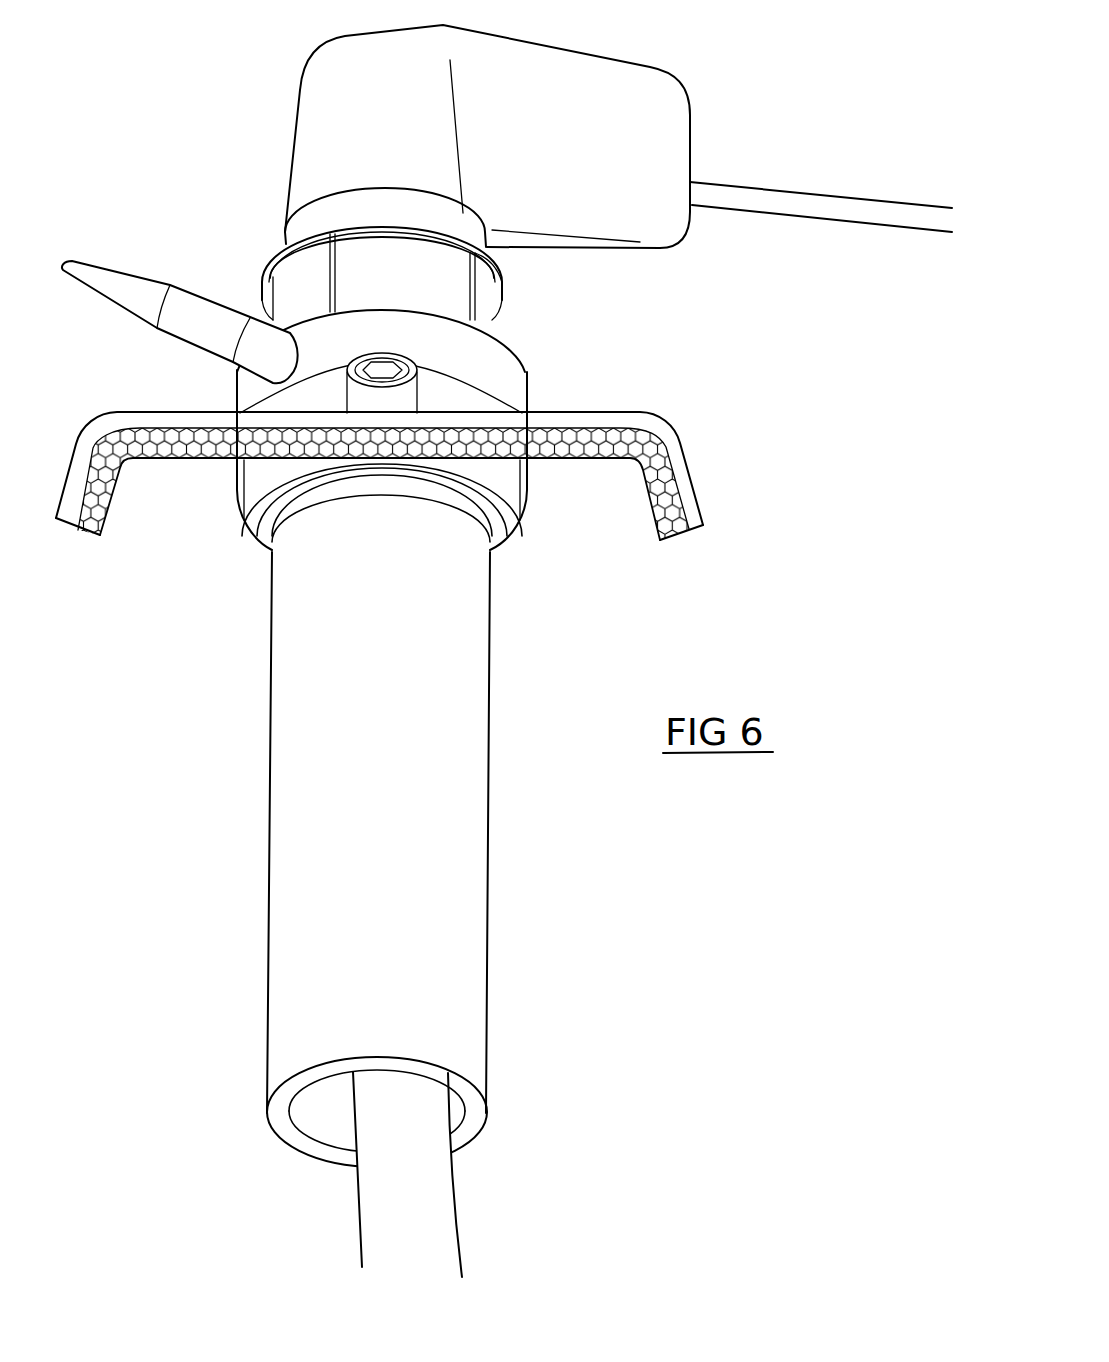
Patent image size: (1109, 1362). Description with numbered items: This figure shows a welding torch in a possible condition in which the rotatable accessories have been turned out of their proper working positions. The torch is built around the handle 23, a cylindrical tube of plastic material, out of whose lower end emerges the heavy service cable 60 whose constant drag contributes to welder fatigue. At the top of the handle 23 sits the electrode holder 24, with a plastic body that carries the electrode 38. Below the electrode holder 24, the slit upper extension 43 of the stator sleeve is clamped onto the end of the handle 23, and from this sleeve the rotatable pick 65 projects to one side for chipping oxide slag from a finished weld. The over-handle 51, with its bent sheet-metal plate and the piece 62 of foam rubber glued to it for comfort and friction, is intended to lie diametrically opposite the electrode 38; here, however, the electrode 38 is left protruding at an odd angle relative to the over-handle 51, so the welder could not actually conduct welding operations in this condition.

The handle 23 is at (443, 847).
The electrode holder 24 is at (605, 211).
The electrode 38 is at (846, 207).
The upper extension 43 is at (457, 298).
The over-handle 51 is at (430, 499).
The service cable 60 is at (423, 1202).
The piece of foam rubber 62 is at (665, 493).
The rotatable pick 65 is at (122, 287).